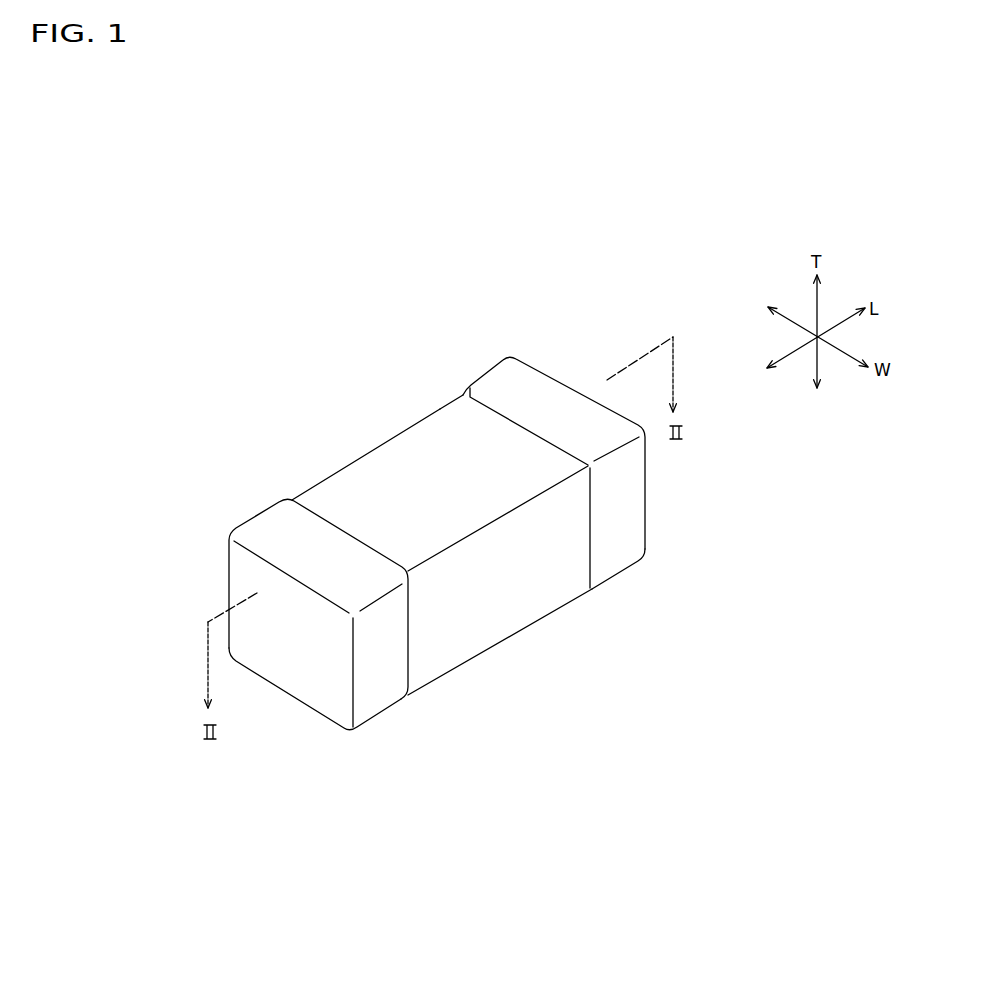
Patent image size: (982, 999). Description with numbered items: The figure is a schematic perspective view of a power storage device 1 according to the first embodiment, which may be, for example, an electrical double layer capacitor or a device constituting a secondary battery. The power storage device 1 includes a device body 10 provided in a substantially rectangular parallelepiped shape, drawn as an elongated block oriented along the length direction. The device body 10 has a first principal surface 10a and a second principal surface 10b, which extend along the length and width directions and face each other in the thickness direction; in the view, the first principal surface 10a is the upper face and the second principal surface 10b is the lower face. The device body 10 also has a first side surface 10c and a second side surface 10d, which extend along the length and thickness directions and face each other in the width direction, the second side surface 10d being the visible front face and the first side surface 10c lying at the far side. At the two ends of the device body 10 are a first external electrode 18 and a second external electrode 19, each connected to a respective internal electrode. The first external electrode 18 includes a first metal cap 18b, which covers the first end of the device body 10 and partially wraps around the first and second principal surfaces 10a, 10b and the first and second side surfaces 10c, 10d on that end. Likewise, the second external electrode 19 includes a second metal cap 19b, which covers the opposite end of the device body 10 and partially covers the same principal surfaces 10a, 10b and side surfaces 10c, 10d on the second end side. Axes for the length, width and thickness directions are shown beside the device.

The power storage device 1 is at (595, 327).
The device body 10 is at (421, 401).
The first principal surface 10a is at (413, 453).
The second principal surface 10b is at (480, 652).
The first side surface 10c is at (450, 400).
The second side surface 10d is at (437, 658).
The first external electrode 18 is at (227, 583).
The first metal cap 18b is at (308, 695).
The second external electrode 19 is at (647, 498).
The second metal cap 19b is at (647, 548).